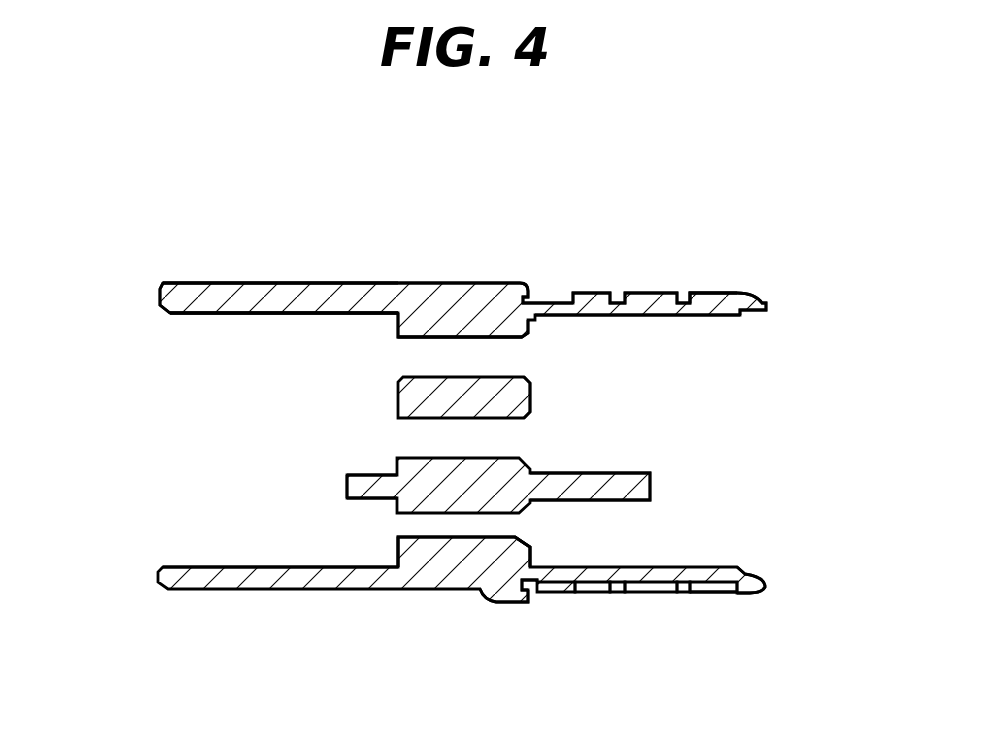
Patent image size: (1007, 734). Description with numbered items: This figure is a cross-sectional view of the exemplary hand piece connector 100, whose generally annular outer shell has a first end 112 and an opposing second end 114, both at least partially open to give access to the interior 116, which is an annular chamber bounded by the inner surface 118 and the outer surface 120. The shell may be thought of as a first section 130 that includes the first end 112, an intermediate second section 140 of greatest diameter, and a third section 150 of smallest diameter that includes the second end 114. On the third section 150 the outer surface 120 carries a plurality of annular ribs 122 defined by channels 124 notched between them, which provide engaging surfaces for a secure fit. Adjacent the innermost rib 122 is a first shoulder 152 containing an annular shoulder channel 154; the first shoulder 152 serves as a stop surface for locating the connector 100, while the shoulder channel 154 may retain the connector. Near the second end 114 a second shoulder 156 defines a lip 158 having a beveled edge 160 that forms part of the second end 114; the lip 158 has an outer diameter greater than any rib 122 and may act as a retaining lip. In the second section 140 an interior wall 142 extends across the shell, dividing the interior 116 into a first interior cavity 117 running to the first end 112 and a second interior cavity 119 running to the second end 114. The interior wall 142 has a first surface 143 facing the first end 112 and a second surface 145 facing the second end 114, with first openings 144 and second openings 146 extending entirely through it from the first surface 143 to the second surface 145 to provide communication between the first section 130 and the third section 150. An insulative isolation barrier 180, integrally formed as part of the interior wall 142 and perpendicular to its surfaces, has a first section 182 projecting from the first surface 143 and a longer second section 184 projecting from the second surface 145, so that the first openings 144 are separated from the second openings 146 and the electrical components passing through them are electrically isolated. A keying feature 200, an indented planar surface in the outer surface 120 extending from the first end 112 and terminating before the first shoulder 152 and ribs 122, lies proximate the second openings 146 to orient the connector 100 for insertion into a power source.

The hand piece connector 100 is at (389, 186).
The first end 112 is at (160, 288).
The second end 114 is at (768, 293).
The interior 116 is at (170, 396).
The first interior cavity 117 is at (286, 430).
The inner surface 118 is at (206, 315).
The second interior cavity 119 is at (681, 438).
The outer surface 120 is at (228, 282).
The ribs 122 is at (590, 290).
The channels 124 is at (683, 596).
The first section 130 is at (287, 256).
The second section 140 is at (485, 268).
The interior wall 142 is at (470, 560).
The first surface 143 is at (398, 390).
The first openings 144 is at (459, 353).
The second surface 145 is at (530, 394).
The second openings 146 is at (423, 525).
The third section 150 is at (658, 272).
The first shoulder 152 is at (538, 596).
The shoulder channel 154 is at (546, 292).
The second shoulder 156 is at (758, 290).
The lip 158 is at (745, 596).
The beveled edge 160 is at (765, 592).
The isolation barrier 180 is at (690, 474).
The first section of isolation barrier 182 is at (348, 486).
The second section of isolation barrier 184 is at (636, 487).
The keying feature 200 is at (308, 614).